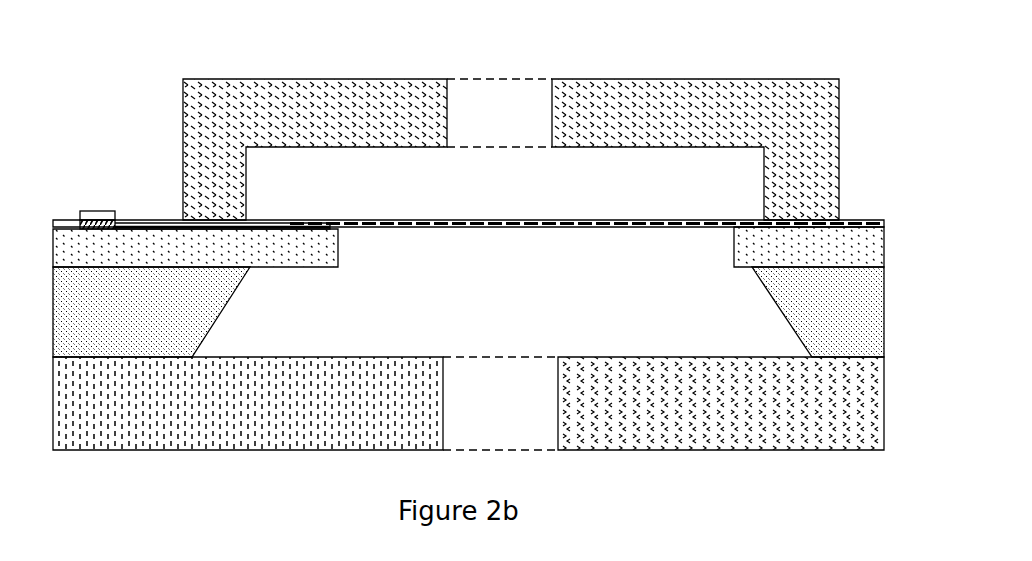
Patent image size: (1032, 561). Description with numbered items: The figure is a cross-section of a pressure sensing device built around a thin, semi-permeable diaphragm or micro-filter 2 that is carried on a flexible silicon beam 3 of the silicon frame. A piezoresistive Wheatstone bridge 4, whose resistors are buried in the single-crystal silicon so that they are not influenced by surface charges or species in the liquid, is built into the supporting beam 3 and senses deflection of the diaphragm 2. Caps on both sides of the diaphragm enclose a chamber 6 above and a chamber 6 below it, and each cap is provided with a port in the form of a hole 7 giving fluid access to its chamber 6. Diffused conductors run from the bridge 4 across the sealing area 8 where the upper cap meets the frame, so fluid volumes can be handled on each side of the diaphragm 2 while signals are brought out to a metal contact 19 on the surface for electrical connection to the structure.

The diaphragm 2 is at (643, 222).
The silicon beam 3 is at (65, 247).
The piezoresistive Wheatstone bridge 4 is at (309, 222).
The chamber 6 is at (355, 177).
The hole 7 is at (509, 100).
The sealing area 8 is at (173, 213).
The metal contact 19 is at (95, 213).